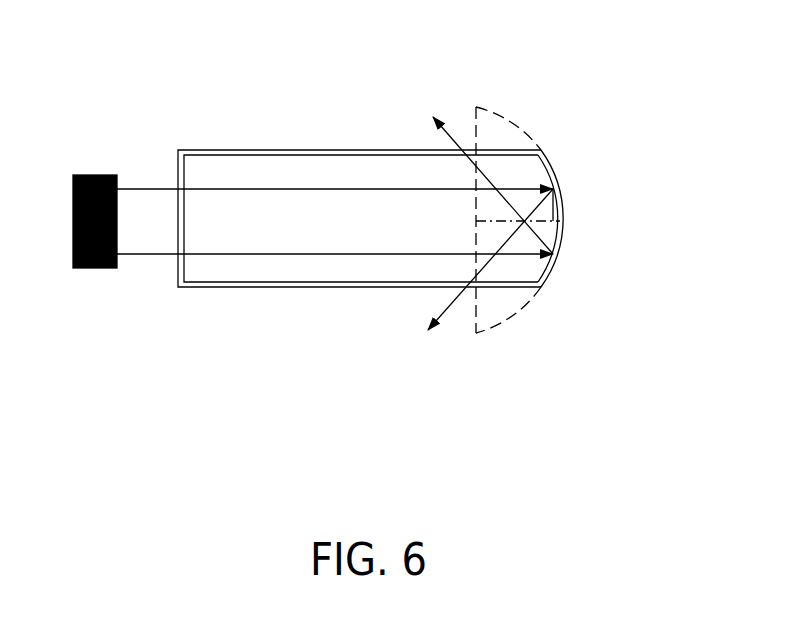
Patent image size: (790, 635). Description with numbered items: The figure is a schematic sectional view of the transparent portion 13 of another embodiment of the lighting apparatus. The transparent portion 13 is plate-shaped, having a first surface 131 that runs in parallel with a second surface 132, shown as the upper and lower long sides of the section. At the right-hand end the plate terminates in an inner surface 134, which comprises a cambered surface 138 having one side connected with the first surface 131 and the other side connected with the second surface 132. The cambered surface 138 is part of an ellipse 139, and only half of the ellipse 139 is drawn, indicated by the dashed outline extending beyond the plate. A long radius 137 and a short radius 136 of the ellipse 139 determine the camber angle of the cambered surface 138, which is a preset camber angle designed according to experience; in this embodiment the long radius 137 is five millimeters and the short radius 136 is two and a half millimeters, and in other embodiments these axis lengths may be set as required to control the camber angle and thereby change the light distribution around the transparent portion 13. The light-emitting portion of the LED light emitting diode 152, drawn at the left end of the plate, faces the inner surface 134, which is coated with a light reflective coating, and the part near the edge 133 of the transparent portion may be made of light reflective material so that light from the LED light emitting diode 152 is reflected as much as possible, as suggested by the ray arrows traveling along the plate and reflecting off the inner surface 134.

The transparent portion 13 is at (288, 78).
The first surface 131 is at (287, 287).
The second surface 132 is at (307, 150).
The edge 133 is at (602, 253).
The inner surface 134 is at (561, 233).
The short radius 136 is at (555, 189).
The long radius 137 is at (473, 125).
The cambered surface 138 is at (555, 267).
The ellipse 139 is at (508, 123).
The LED light emitting diode 152 is at (100, 175).